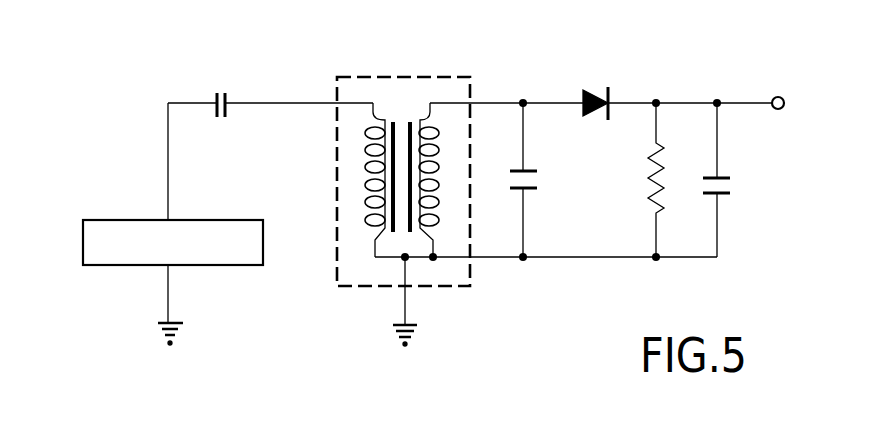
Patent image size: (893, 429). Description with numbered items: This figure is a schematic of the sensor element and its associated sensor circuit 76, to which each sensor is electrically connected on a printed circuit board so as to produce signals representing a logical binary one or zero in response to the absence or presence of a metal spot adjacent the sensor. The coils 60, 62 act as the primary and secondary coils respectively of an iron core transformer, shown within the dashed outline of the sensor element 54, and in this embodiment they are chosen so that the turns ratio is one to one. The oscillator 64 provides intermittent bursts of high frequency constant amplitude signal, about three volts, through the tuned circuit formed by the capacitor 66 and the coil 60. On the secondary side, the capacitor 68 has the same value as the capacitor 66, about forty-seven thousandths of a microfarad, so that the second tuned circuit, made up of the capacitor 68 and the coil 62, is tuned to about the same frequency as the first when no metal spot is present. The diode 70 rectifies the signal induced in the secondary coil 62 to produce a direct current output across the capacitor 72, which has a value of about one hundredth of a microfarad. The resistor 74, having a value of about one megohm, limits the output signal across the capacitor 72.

The transformer 54 is at (368, 292).
The coil 60 is at (385, 113).
The coil 62 is at (426, 100).
The oscillator 64 is at (151, 218).
The capacitor 66 is at (211, 100).
The capacitor 68 is at (530, 192).
The diode 70 is at (592, 120).
The capacitor 72 is at (727, 193).
The resistor 74 is at (652, 200).
The sensor circuit 76 is at (415, 56).